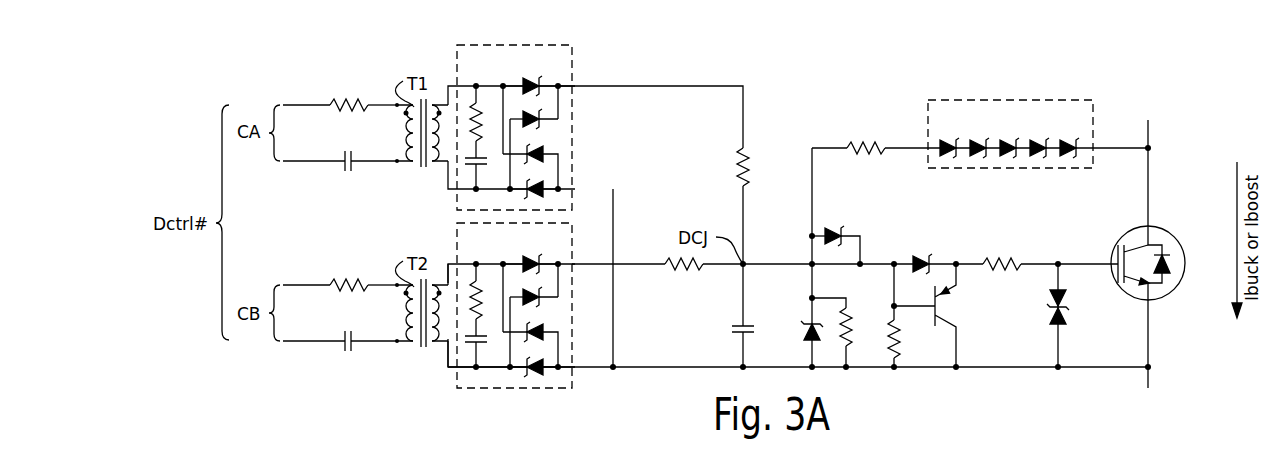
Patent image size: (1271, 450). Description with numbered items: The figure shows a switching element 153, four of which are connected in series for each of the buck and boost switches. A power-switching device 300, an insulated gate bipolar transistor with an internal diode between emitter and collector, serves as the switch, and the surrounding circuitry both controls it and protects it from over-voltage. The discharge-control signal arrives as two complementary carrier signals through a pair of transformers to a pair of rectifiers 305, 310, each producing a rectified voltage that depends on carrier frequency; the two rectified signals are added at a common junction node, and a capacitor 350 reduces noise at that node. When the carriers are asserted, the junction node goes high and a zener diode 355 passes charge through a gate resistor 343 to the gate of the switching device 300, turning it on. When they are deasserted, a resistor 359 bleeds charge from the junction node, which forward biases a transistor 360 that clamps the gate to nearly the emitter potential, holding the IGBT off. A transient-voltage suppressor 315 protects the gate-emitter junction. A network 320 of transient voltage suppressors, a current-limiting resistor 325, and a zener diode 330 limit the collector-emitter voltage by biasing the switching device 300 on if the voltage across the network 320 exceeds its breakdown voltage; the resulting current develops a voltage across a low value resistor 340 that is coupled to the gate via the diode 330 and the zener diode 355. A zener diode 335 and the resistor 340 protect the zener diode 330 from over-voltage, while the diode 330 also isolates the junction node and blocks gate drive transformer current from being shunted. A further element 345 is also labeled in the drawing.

The switching element 153 is at (285, 76).
The power-switching device 300 is at (1162, 229).
The rectifier 305 is at (531, 69).
The rectifier 310 is at (531, 247).
The transient-voltage suppressor 315 is at (1066, 312).
The network of transient voltage suppressors 320 is at (1027, 124).
The resistor 325 is at (850, 144).
The zener diode 330 is at (828, 233).
The zener diode 335 is at (809, 324).
The resistor 340 is at (858, 303).
The gate resistor 343 is at (1004, 259).
The circuit element 345 is at (275, 449).
The capacitor 350 is at (738, 324).
The zener diode 355 is at (920, 257).
The resistor 359 is at (898, 353).
The transistor 360 is at (944, 299).